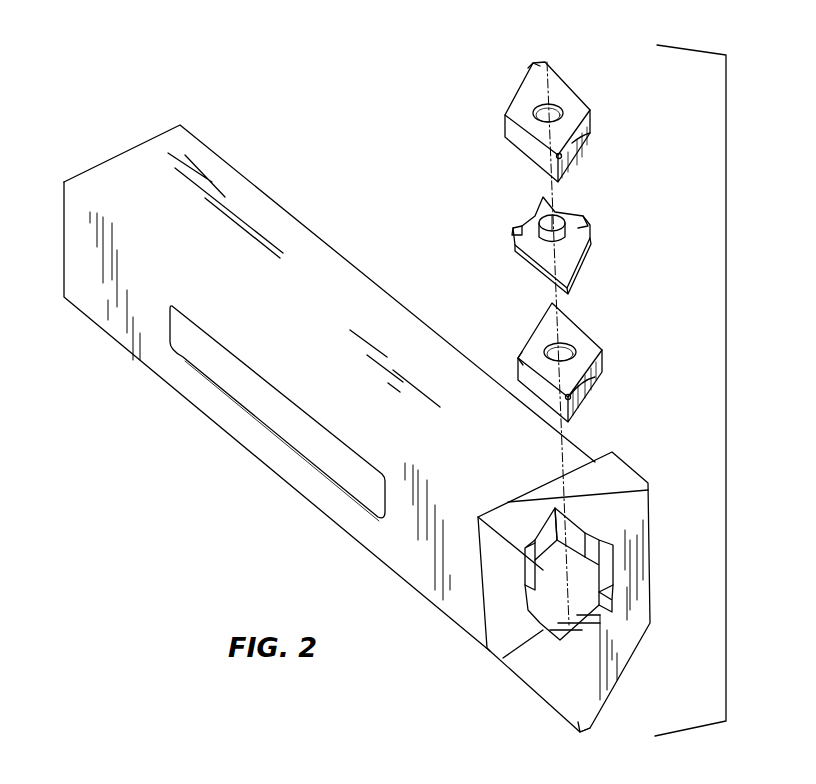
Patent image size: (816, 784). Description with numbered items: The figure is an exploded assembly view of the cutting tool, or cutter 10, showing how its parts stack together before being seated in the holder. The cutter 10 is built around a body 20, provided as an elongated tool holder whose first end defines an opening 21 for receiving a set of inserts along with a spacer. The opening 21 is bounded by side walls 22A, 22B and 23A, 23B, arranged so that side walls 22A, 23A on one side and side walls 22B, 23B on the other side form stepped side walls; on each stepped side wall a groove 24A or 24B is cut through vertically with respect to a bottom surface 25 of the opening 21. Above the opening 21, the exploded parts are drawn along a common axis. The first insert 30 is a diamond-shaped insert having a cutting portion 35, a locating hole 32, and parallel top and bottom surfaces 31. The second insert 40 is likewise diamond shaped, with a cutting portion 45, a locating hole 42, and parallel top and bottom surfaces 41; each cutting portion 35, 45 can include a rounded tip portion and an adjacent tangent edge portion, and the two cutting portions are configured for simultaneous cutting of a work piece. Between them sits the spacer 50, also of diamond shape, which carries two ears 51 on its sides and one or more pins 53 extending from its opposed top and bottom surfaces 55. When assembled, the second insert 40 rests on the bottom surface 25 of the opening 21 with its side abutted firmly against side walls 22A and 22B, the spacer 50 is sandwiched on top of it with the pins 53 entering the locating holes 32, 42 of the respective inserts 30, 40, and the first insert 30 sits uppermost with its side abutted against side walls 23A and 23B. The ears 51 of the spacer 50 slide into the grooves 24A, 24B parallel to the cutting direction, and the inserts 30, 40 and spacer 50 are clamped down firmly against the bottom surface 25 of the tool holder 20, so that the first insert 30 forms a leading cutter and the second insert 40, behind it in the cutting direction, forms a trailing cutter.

The cutting tool 10 is at (322, 178).
The body 20 is at (326, 491).
The opening 21 is at (588, 626).
The side wall 22A is at (613, 598).
The side wall 22B is at (545, 625).
The side wall 23A is at (578, 545).
The side wall 23B is at (550, 525).
The groove 24A is at (602, 545).
The groove 24B is at (527, 537).
The bottom surface 25 is at (592, 641).
The first insert 30 is at (590, 101).
The top and bottom surfaces 31 is at (533, 82).
The locating hole 32 is at (532, 105).
The cutting portion 35 is at (563, 154).
The second insert 40 is at (585, 324).
The top and bottom surfaces 41 is at (533, 354).
The locating hole 42 is at (551, 346).
The cutting portion 45 is at (571, 395).
The spacer 50 is at (604, 249).
The ears 51 is at (513, 231).
The pins 53 is at (548, 214).
The top and bottom surfaces 55 is at (548, 240).